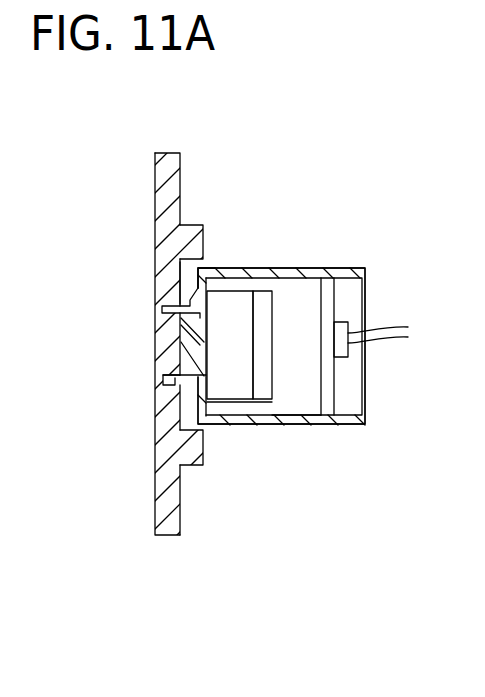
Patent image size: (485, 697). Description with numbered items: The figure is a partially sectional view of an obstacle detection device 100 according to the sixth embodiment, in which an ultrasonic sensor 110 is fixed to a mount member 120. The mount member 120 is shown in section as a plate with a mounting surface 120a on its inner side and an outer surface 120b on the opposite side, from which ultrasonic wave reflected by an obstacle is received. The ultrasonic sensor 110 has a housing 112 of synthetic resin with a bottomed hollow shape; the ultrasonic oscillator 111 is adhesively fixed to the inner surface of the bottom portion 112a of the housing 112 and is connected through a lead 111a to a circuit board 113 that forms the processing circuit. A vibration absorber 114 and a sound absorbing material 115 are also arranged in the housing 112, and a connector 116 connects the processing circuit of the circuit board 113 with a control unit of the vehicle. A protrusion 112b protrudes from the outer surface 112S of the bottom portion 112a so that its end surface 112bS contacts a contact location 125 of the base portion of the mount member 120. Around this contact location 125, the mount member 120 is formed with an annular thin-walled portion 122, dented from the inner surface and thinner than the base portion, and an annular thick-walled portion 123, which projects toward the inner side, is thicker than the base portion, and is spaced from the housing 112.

The obstacle detection device 100 is at (295, 200).
The ultrasonic sensor 110 is at (370, 430).
The ultrasonic oscillator 111 is at (223, 385).
The lead 111a is at (256, 333).
The housing 112 is at (265, 275).
The bottom portion 112a is at (200, 292).
The protrusion 112b is at (168, 310).
The outer surface 112S is at (178, 303).
The end surface 112bS is at (165, 378).
The circuit board 113 is at (338, 293).
The vibration absorber 114 is at (295, 397).
The sound absorbing material 115 is at (265, 395).
The connector 116 is at (347, 355).
The mount member 120 is at (152, 172).
The mounting surface 120a is at (180, 173).
The outer surface 120b is at (155, 210).
The thin-walled portion 122 is at (170, 385).
The thick-walled portion 123 is at (190, 458).
The contact location 125 is at (186, 336).